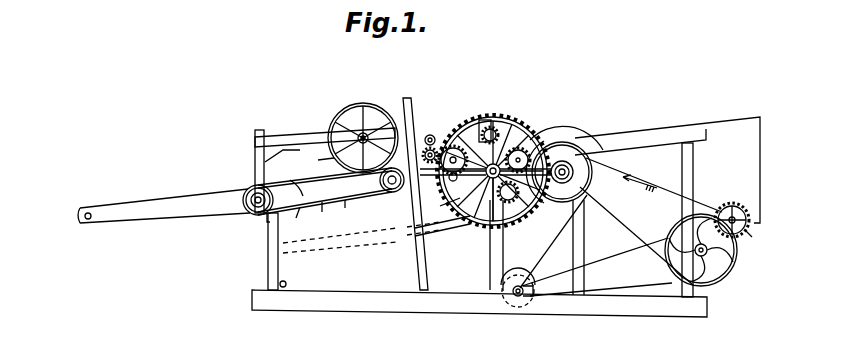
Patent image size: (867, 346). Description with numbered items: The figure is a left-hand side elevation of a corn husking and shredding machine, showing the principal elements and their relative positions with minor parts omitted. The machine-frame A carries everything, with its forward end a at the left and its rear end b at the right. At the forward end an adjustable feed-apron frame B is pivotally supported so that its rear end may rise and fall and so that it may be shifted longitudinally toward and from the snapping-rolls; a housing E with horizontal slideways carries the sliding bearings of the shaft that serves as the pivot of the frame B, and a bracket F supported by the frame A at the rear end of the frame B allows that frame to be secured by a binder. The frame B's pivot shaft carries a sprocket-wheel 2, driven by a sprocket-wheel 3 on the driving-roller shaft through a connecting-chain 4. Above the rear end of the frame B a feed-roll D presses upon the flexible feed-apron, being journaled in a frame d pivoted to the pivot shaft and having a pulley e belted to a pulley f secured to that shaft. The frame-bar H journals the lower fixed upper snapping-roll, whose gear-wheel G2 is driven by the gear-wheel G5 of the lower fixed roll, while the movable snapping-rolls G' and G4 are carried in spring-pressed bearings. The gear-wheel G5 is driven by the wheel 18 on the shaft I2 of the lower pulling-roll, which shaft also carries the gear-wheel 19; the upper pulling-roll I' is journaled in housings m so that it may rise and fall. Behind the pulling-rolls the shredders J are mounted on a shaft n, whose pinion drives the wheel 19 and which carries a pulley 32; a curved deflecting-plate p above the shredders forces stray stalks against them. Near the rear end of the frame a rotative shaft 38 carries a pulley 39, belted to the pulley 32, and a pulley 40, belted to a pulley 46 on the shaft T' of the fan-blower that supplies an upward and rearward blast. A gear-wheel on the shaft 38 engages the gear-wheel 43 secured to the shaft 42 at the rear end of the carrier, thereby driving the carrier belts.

The machine-frame A is at (343, 303).
The forward end of the frame a is at (267, 263).
The rear end of the frame b is at (712, 307).
The feed-apron frame B is at (175, 218).
The feed-roll frame d is at (280, 137).
The feed-roll D is at (364, 104).
The housing E is at (262, 219).
The bracket F is at (394, 193).
The pulley f is at (300, 188).
The pulley e is at (320, 159).
The sprocket-wheel 2 is at (296, 214).
The sprocket-wheel 3 is at (346, 206).
The connecting-chain 4 is at (322, 210).
The frame-bar H is at (409, 100).
The pulling-roll I' is at (493, 157).
The shaft I2 is at (516, 204).
The toothed gear-wheel 18 is at (512, 226).
The toothed gear-wheel 19 is at (522, 147).
The housing m is at (482, 128).
The upper snapping-roll G' is at (420, 123).
The toothed gear-wheel G5 is at (434, 148).
The toothed gear-wheel G2 is at (446, 172).
The snapping-roll G4 is at (448, 210).
The shredders J is at (578, 142).
The curved deflecting-plate p is at (563, 130).
The shredder shaft n is at (592, 187).
The pulley 32 is at (590, 195).
The pulley 39 is at (676, 235).
The pulley 40 is at (662, 272).
The pulley 46 is at (530, 287).
The fan-blower shaft T' is at (512, 308).
The shaft 42 is at (746, 206).
The gear-wheel 43 is at (750, 237).
The rotative shaft 38 is at (735, 266).